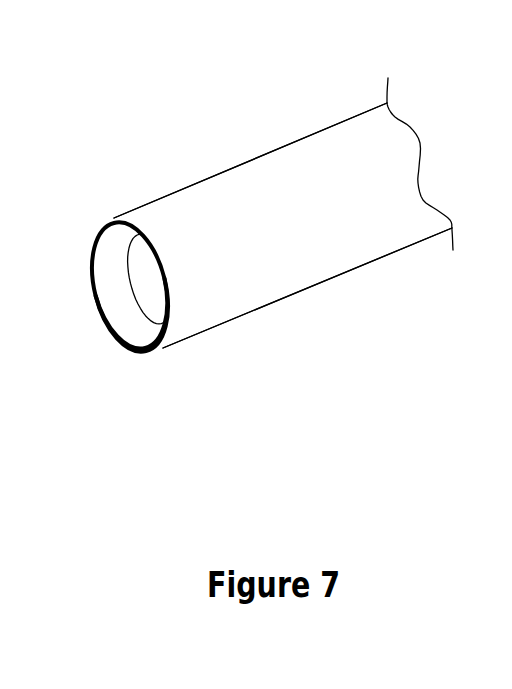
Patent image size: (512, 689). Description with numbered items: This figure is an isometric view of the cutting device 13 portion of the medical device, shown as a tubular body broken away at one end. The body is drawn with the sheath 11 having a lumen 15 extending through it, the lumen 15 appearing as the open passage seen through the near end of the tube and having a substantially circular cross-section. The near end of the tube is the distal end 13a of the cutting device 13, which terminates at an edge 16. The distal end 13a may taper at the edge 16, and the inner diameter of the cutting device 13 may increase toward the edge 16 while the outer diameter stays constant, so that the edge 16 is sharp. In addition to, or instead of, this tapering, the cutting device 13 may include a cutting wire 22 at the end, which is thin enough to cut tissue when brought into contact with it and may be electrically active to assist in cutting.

The sheath 11 is at (353, 117).
The cutting device 13 is at (186, 188).
The distal end 13a is at (166, 349).
The lumen 15 is at (147, 275).
The edge 16 is at (126, 217).
The cutting wire 22 is at (139, 356).